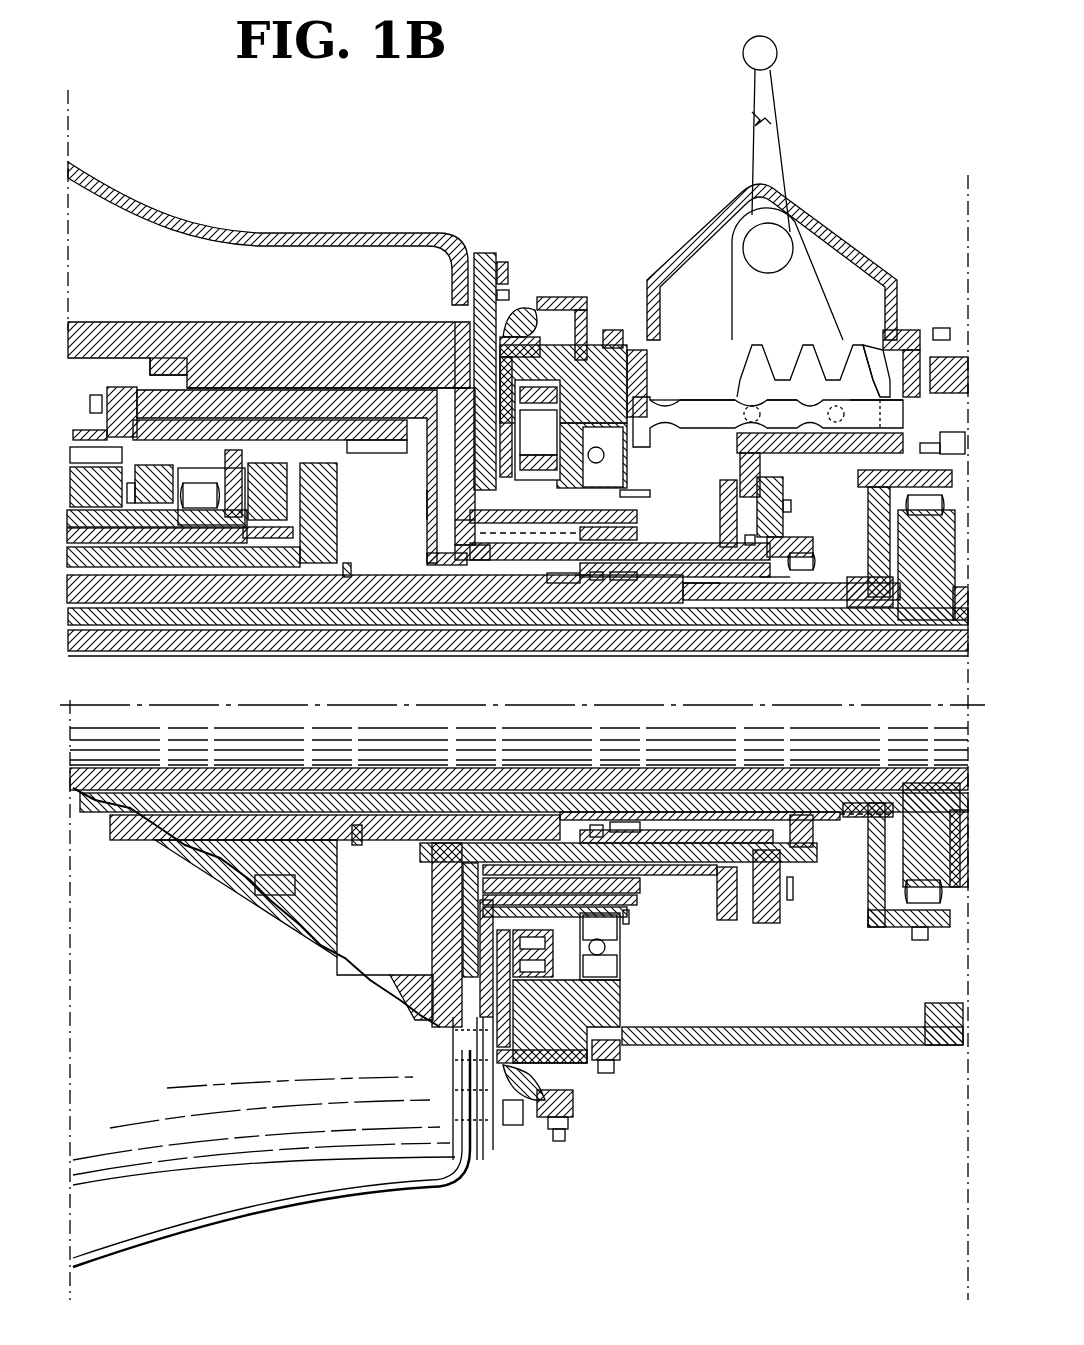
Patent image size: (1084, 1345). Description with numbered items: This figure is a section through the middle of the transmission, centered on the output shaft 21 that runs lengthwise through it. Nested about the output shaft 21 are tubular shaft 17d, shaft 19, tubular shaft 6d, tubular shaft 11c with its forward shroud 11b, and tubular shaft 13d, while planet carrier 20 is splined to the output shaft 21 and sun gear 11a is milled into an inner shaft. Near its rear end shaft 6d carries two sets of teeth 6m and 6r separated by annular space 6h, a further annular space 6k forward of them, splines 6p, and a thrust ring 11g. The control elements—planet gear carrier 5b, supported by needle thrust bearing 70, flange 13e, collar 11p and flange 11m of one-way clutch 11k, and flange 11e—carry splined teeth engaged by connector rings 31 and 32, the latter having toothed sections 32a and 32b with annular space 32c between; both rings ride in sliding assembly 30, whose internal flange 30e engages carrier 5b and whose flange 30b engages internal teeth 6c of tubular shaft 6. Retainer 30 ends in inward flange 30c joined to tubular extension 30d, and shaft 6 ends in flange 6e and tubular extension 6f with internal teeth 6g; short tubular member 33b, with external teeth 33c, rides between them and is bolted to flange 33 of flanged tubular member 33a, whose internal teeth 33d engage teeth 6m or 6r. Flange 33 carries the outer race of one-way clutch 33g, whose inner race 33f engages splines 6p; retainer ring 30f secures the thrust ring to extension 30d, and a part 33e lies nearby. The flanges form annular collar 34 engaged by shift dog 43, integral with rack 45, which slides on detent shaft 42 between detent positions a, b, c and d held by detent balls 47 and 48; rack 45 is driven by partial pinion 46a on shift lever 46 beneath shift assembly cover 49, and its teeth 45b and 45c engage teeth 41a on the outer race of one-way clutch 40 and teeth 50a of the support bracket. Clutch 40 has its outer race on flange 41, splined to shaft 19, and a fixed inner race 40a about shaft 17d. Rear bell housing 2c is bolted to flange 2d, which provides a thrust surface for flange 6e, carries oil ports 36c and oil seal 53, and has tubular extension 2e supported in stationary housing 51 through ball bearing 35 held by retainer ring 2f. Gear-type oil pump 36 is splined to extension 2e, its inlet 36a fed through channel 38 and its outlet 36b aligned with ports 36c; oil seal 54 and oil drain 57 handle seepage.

The rear bell housing 2c is at (200, 222).
The flange 2d is at (487, 253).
The oil seal 53 is at (520, 310).
The oil seal 54 is at (568, 298).
The shift lever 46 is at (770, 130).
The partial pinion 46a is at (803, 309).
The shift assembly cover 49 is at (812, 197).
The tubular shaft 6 is at (88, 340).
The internal teeth 6c is at (157, 340).
The collar 11p is at (190, 470).
The one-way clutch 11k is at (207, 465).
The flange 11m is at (250, 460).
The internally toothed section 32a is at (262, 440).
The annular space 32c is at (310, 440).
The connector ring 32 is at (330, 437).
The oil ports 36c is at (465, 335).
The flange 30b is at (137, 381).
The internal flange 30e is at (107, 437).
The connector ring 31 is at (161, 430).
The sliding assembly 30 is at (397, 414).
The planet gear carrier 5b is at (96, 476).
The needle type thrust bearing 70 is at (126, 493).
The flange 13e is at (156, 484).
The shroud 11b is at (275, 500).
The flange 11e is at (322, 513).
The internally toothed section 32b is at (394, 447).
The inwardly extending flange 6e is at (470, 488).
The inwardly extending flange 30c is at (433, 508).
The tubular extension 6f is at (472, 522).
The internal teeth 6g is at (473, 542).
The tubular extension 30d is at (440, 563).
The tubular shaft 13d is at (102, 527).
The sun gear 11a is at (183, 549).
The tubular shaft 6d is at (246, 595).
The tubular shaft 11c is at (243, 532).
The planet carrier 20 is at (518, 670).
The tubular shaft 19 is at (195, 623).
The tubular shaft 17d is at (298, 640).
The oil pump outlet 36b is at (513, 408).
The gear-type oil pump 36 is at (533, 418).
The housing 51 is at (597, 396).
The tubular extension 2e is at (638, 495).
The external teeth 33c is at (655, 527).
The short tubular member 33b is at (672, 543).
The shift dog 43 is at (760, 478).
The annular collar 34 is at (782, 496).
The tooth 45b is at (880, 465).
The flange 41 is at (870, 508).
The flange 33 is at (805, 547).
The one-way clutch 33g is at (813, 560).
The detent shaft 42 is at (690, 410).
The rack 45 is at (740, 390).
The detent ball 47 is at (760, 426).
The detent ball 48 is at (845, 400).
The teeth 50a is at (963, 440).
The tooth 45c is at (947, 435).
The detent position a is at (669, 424).
The detent position b is at (729, 424).
The detent position c is at (784, 424).
The detent position d is at (891, 424).
The annular space 6k is at (535, 585).
The teeth 6m is at (560, 585).
The annular space 6h is at (582, 585).
The teeth 6r is at (625, 585).
The internal teeth 33d is at (600, 580).
The splines 6p is at (710, 585).
The flanged tubular member 33a is at (772, 590).
The inner race 33f is at (830, 595).
The inner race 40a is at (935, 570).
The output shaft 21 is at (393, 742).
The thrust ring 11g is at (354, 848).
The retainer ring 30f is at (760, 860).
The plate 33e is at (758, 880).
The one-way clutch 40 is at (896, 898).
The splined teeth 41a is at (925, 940).
The retainer ring 2f is at (630, 917).
The ball bearing 35 is at (628, 949).
The channel 38 is at (595, 1022).
The oil pump inlet 36a is at (605, 1072).
The oil drain 57 is at (560, 1140).